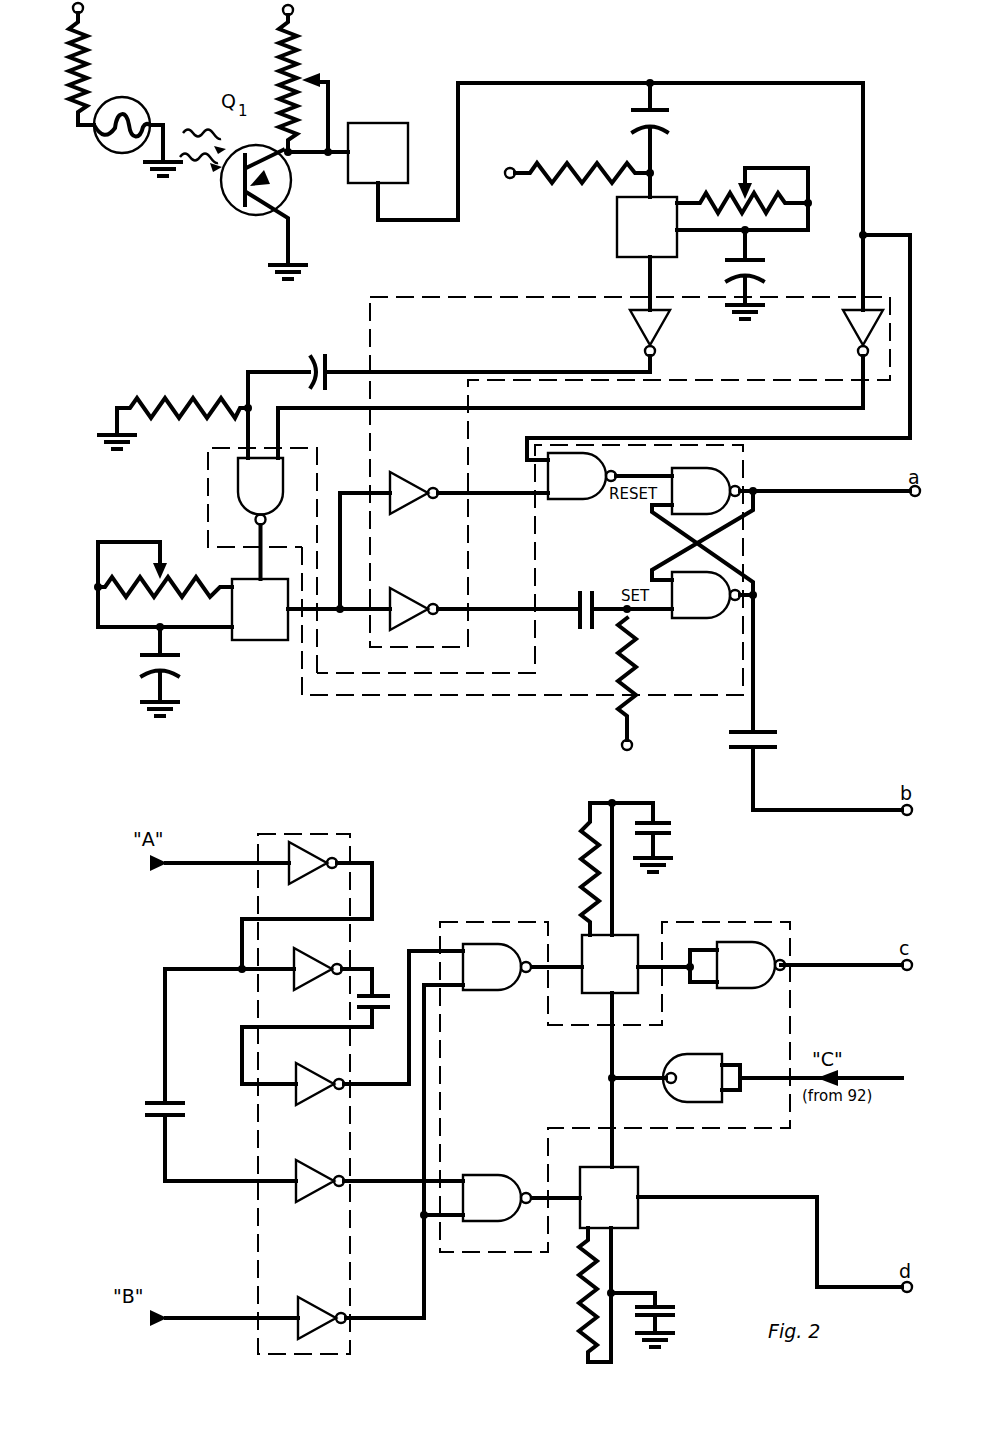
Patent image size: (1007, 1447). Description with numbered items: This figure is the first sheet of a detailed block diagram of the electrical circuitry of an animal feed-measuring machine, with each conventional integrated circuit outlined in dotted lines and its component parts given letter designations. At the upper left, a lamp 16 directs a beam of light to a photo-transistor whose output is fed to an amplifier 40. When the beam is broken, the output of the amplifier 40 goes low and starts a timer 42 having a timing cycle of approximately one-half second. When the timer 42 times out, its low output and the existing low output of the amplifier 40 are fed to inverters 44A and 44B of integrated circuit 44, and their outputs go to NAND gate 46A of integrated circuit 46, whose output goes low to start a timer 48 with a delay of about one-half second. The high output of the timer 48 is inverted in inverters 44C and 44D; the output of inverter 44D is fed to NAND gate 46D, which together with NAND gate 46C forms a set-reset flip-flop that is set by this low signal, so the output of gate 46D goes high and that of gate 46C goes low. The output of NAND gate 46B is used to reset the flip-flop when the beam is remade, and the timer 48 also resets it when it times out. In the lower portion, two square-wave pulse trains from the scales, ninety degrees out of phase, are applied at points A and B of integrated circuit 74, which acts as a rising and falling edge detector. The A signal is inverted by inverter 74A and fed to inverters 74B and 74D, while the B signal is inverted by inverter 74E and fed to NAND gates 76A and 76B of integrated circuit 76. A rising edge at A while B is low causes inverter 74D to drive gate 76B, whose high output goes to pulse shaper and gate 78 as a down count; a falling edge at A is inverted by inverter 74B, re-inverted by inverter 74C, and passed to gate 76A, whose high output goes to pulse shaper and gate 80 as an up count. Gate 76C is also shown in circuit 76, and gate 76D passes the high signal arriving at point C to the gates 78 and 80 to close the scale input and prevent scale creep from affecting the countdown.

The lamp 16 is at (137, 101).
The amplifier 40 is at (378, 132).
The timer 42 is at (617, 220).
The integrated circuit 44 is at (473, 296).
The inverter 44A is at (637, 322).
The inverter 44B is at (857, 322).
The inverter 44C is at (410, 487).
The inverter 44D is at (409, 603).
The integrated circuit 46 is at (437, 696).
The NAND gate 46A is at (245, 493).
The NAND gate 46B is at (570, 491).
The NAND gate 46C is at (710, 481).
The NAND gate 46D is at (685, 612).
The timer 48 is at (266, 643).
The integrated circuit 74 is at (258, 1219).
The inverter 74A is at (307, 858).
The inverter 74B is at (306, 976).
The inverter 74C is at (308, 1095).
The inverter 74D is at (302, 1197).
The inverter 74E is at (321, 1309).
The integrated circuit 76 is at (478, 1252).
The NAND gate 76A is at (484, 980).
The NAND gate 76B is at (493, 1182).
The NAND gate 76C is at (737, 945).
The inverter 76D is at (705, 1071).
The pulse shaper and gate 78 is at (625, 1215).
The pulse shaper and gate 80 is at (585, 942).